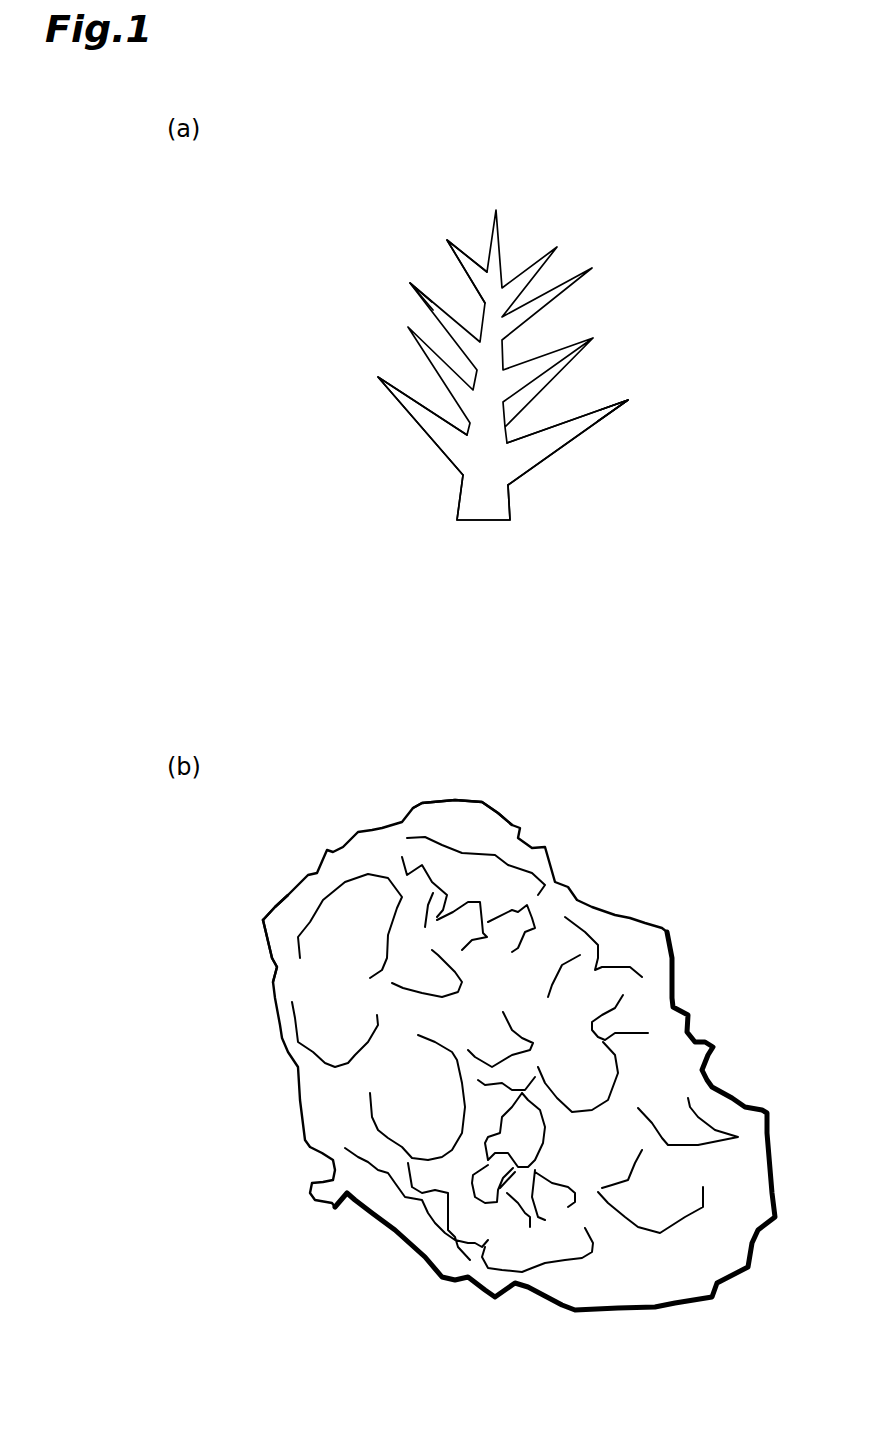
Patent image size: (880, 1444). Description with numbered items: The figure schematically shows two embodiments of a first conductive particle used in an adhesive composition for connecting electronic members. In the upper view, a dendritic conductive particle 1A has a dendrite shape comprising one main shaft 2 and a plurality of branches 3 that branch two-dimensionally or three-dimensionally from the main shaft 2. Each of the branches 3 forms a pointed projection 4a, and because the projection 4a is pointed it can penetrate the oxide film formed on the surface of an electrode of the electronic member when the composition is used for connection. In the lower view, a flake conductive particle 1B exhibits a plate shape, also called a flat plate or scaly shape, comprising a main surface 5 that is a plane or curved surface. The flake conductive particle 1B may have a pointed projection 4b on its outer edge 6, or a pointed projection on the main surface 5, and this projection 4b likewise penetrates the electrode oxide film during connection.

The dendritic conductive particle 1A is at (604, 207).
The main shaft 2 is at (488, 508).
The branch 3 is at (447, 305).
The pointed projection 4a is at (372, 372).
The flake conductive particle 1B is at (698, 837).
The main surface 5 is at (485, 823).
The outer edge 6 is at (268, 912).
The pointed projection 4b is at (238, 912).